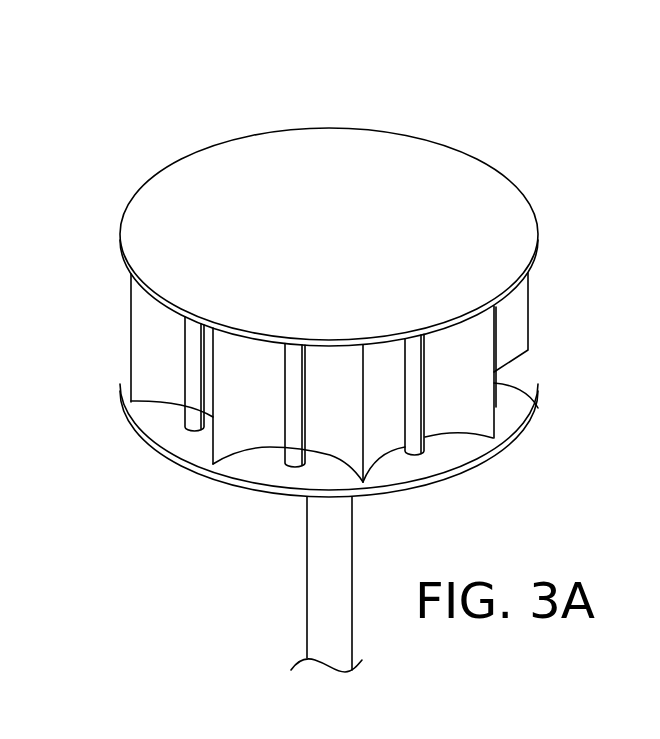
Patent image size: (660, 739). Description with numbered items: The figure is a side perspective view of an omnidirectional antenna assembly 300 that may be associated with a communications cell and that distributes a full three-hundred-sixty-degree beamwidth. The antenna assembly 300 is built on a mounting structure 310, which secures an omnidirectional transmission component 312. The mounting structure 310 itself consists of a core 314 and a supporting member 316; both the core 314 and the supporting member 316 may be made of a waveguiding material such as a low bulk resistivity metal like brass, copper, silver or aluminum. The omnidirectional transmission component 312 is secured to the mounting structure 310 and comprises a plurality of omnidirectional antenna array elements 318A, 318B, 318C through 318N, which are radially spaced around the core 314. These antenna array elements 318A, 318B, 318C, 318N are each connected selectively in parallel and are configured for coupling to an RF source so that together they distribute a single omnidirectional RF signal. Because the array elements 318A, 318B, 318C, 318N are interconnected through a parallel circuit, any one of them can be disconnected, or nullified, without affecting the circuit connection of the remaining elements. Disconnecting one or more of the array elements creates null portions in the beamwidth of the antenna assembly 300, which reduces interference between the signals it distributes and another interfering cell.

The omnidirectional antenna assembly 300 is at (126, 112).
The mounting structure 310 is at (543, 361).
The omnidirectional transmission component 312 is at (428, 460).
The core 314 is at (148, 319).
The supporting member 316 is at (345, 247).
The omnidirectional antenna array element 318A is at (192, 377).
The omnidirectional antenna array element 318B is at (290, 457).
The omnidirectional antenna array element 318C is at (411, 446).
The omnidirectional antenna array element 318N is at (537, 406).